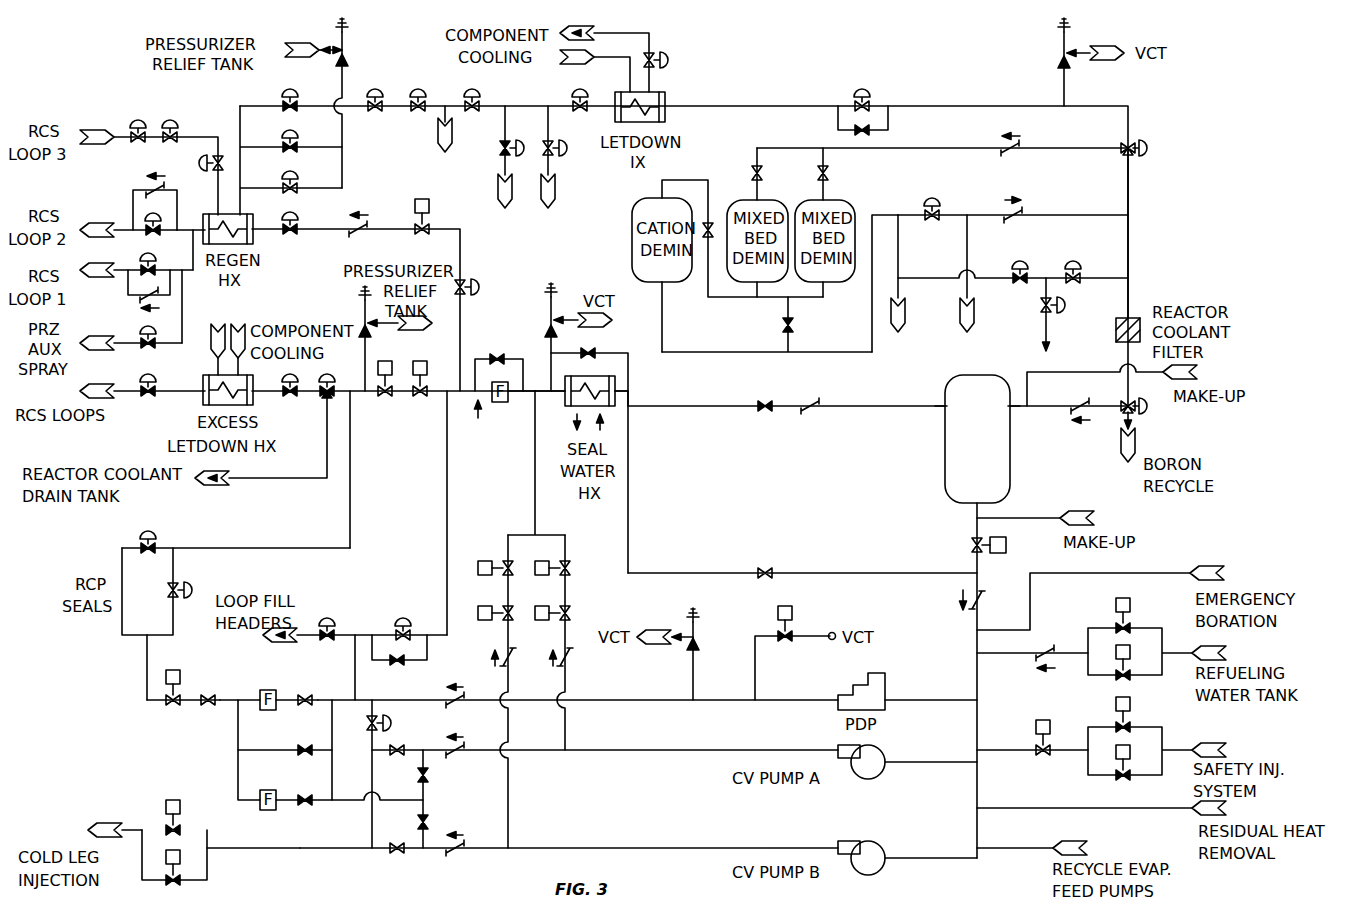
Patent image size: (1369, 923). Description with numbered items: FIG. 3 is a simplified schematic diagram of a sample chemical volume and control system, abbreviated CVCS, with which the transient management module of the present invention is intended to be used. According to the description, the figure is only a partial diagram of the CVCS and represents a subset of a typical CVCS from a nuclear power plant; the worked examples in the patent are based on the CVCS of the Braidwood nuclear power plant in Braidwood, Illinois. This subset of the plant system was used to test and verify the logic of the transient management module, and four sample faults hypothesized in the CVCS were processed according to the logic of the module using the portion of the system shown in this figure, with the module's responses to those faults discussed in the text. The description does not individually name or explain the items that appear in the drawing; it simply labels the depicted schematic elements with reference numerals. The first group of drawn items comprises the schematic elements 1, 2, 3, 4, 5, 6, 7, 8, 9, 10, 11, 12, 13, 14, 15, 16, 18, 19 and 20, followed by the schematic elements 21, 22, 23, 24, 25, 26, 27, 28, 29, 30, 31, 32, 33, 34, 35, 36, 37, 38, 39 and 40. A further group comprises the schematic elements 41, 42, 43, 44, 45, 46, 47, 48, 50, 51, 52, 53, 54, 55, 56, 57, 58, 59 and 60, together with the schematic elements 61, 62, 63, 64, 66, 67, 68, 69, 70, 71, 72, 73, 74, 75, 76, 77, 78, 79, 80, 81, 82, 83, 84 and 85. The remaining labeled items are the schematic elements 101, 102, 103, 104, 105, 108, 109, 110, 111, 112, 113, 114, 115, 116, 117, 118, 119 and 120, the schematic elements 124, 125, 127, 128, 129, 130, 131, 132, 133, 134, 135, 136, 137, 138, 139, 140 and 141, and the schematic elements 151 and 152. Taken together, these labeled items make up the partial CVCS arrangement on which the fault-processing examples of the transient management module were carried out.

The volume control tank 1 is at (977, 439).
The VCT outlet line 2 is at (811, 577).
The emergency boration line 3 is at (1075, 608).
The refueling water tank line 4 is at (1024, 657).
The safety injection line 5 is at (1024, 753).
The pump A discharge line 6 is at (939, 771).
The residual heat removal line 7 is at (1076, 812).
The recycle evaporator feed line 8 is at (1006, 852).
The pump B suction line 9 is at (646, 838).
The valve 10 is at (412, 859).
The line 11 is at (377, 863).
The pump A suction line 12 is at (646, 740).
The valve 13 is at (413, 743).
The valve line 14 is at (433, 799).
The line 15 is at (369, 774).
The line 16 is at (405, 668).
The line 18 is at (343, 750).
The line 19 is at (272, 730).
The line 20 is at (240, 692).
The cold leg injection line 21 is at (253, 861).
The valve 22 is at (156, 817).
The valve 23 is at (149, 867).
The cold leg injection outlet 24 is at (115, 822).
The line 25 is at (336, 692).
The valve 26 is at (311, 713).
The valve 27 is at (372, 643).
The valve 28 is at (387, 629).
The valve actuator 29 is at (414, 627).
The RCP seals line 30 is at (134, 667).
The valve 31 is at (131, 541).
The valve actuator 32 is at (163, 538).
The reactor coolant drain tank line 33 is at (212, 490).
The three-way valve 34 is at (339, 386).
The flow direction 35 is at (474, 422).
The line 36 is at (527, 381).
The bypass valve 37 is at (503, 366).
The flow element 38 is at (511, 400).
The line 39 is at (550, 404).
The bypass valve 40 is at (589, 454).
The seal water HX outlet 41 is at (633, 395).
The line to VCT 42 is at (786, 415).
The VCT inlet 43 is at (952, 408).
The VCT inlet 44 is at (1002, 408).
The make-up line 45 is at (1125, 385).
The bypass valve 46 is at (413, 654).
The loop fill header outlet 47 is at (280, 648).
The relief to VCT 48 is at (591, 337).
The manifold 50 is at (536, 463).
The VCT outlet 51 is at (965, 680).
The PDP discharge line 52 is at (944, 704).
The line 53 is at (786, 682).
The valve 54 is at (807, 623).
The line 55 is at (692, 675).
The relief valve 56 is at (668, 629).
The relief valve 57 is at (395, 338).
The line 58 is at (362, 469).
The line 59 is at (278, 434).
The emergency boration outlet 60 is at (1220, 573).
The refueling water tank outlet 61 is at (1220, 653).
The valve 62 is at (1150, 663).
The valve 63 is at (1150, 619).
The check valve 64 is at (1058, 654).
The safety injection outlet 66 is at (1220, 751).
The valve 67 is at (1150, 718).
The valve 68 is at (1150, 762).
The valve 69 is at (1059, 748).
The residual heat removal outlet 70 is at (1222, 810).
The recycle evaporator outlet 71 is at (1060, 842).
The RCS loops outlet 72 is at (142, 383).
The valve 73 is at (434, 378).
The line 74 is at (459, 513).
The line 75 is at (191, 219).
The valve actuator 76 is at (166, 232).
The valve 77 is at (140, 238).
The bypass check valve 78 is at (143, 202).
The RCS loop 2 outlet 79 is at (128, 222).
The line 80 is at (194, 286).
The valve actuator 81 is at (162, 262).
The valve 82 is at (135, 264).
The bypass check valve 83 is at (137, 291).
The RCS loop 1 outlet 84 is at (136, 262).
The pressurizer auxiliary spray outlet 85 is at (131, 336).
The RCS loop 3 inlet 101 is at (151, 164).
The valve 102 is at (270, 181).
The valve 103 is at (307, 117).
The valve 104 is at (310, 140).
The relief valve 105 is at (316, 103).
The valve 108 is at (435, 100).
The drain outlet 109 is at (444, 144).
The valve 110 is at (507, 132).
The outlet 111 is at (507, 205).
The valve 112 is at (550, 132).
The outlet 113 is at (547, 205).
The valve 114 is at (841, 100).
The valve actuator 115 is at (881, 98).
The bypass valve 116 is at (881, 125).
The line 117 is at (1081, 69).
The three-way valve 118 is at (1116, 158).
The valve 119 is at (838, 174).
The valve 120 is at (773, 174).
The demineralizer outlet 124 is at (757, 301).
The demineralizer outlet 125 is at (814, 301).
The line 127 is at (1013, 268).
The line 128 is at (767, 336).
The line 129 is at (892, 275).
The outlet 130 is at (900, 287).
The valve 131 is at (1013, 209).
The outlet 132 is at (967, 287).
The check valve 133 is at (1061, 210).
The valve 134 is at (1037, 272).
The valve outlet 135 is at (1062, 319).
The line 136 is at (1146, 234).
The three-way valve 137 is at (1145, 419).
The boron recycle outlet 138 is at (1113, 446).
The check valve line 139 is at (1069, 415).
The relief to VCT 140 is at (1091, 43).
The make-up line 141 is at (1035, 511).
The component cooling inlet 151 is at (595, 71).
The component cooling outlet 152 is at (614, 59).